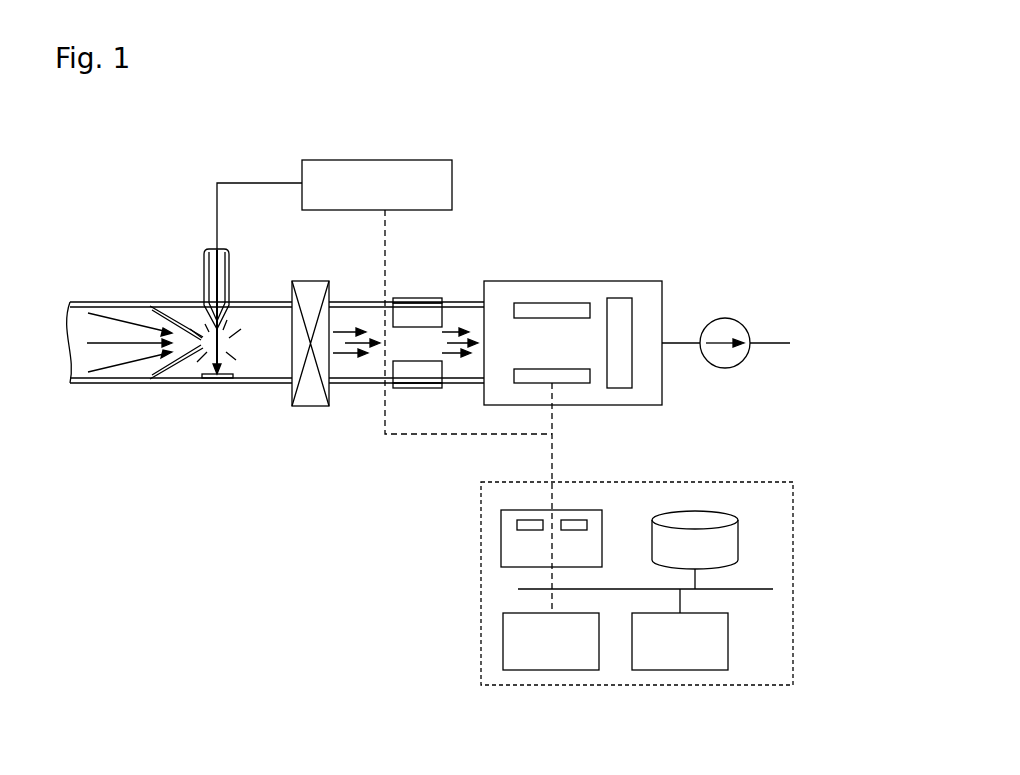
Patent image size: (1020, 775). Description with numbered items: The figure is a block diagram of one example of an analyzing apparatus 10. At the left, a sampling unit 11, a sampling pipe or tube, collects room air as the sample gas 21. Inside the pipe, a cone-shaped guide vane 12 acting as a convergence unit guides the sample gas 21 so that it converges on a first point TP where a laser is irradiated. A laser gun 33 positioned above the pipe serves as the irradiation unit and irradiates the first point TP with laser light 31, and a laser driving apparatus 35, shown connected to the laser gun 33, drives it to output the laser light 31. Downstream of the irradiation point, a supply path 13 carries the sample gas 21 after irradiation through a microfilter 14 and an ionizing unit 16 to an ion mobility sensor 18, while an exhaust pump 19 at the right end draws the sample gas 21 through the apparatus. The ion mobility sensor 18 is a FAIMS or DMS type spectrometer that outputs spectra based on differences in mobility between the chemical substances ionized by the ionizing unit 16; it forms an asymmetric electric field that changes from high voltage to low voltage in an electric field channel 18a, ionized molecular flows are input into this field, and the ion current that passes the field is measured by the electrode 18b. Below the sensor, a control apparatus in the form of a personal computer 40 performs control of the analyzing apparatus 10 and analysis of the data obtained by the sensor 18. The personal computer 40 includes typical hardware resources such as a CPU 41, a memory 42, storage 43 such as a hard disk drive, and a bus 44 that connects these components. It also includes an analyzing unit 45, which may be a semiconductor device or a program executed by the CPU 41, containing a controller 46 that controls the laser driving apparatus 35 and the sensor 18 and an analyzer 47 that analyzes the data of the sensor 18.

The analyzing apparatus 10 is at (552, 223).
The sampling unit 11 is at (103, 302).
The guide vane 12 is at (167, 312).
The supply path 13 is at (345, 300).
The microfilter 14 is at (310, 290).
The ionizing unit 16 is at (420, 298).
The ion mobility sensor 18 is at (572, 315).
The electric field channel 18a is at (555, 303).
The electrode 18b is at (618, 305).
The exhaust pump 19 is at (725, 320).
The sample gas 21 is at (118, 372).
The laser light 31 is at (230, 340).
The laser gun 33 is at (232, 268).
The laser driving apparatus 35 is at (358, 160).
The first point TP is at (236, 356).
The personal computer 40 is at (752, 490).
The CPU 41 is at (523, 666).
The memory 42 is at (650, 666).
The storage 43 is at (705, 520).
The bus 44 is at (750, 590).
The analyzing unit 45 is at (538, 526).
The controller 46 is at (517, 525).
The analyzer 47 is at (587, 525).